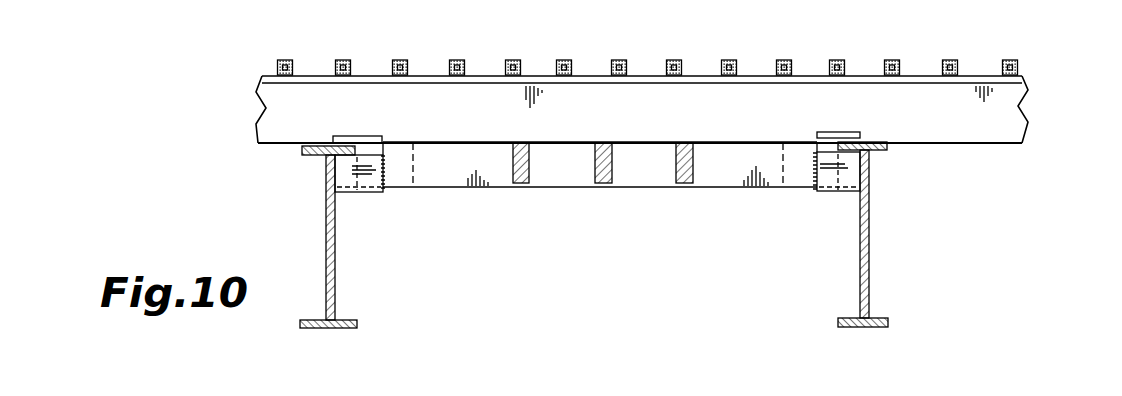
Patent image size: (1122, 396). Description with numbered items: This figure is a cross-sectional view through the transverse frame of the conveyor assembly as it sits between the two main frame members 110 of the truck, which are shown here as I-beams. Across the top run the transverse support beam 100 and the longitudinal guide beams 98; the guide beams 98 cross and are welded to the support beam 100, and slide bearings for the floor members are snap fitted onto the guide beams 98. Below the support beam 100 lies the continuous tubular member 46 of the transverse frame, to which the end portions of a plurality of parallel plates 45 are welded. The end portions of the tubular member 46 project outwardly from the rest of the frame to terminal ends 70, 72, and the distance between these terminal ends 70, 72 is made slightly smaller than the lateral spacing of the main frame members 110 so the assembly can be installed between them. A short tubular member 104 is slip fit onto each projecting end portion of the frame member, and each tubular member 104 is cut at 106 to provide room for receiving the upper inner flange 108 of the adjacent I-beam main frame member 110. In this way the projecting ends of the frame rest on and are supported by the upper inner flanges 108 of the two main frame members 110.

The longitudinal guide beam 98 is at (463, 62).
The transverse support beam 100 is at (1013, 115).
The continuous tubular member 46 is at (730, 178).
The parallel plates 45 is at (681, 184).
The main frame member 110 is at (335, 260).
The upper inner flange 108 is at (345, 143).
The cut 106 is at (378, 148).
The short tubular member 104 is at (370, 192).
The terminal end 72 is at (324, 178).
The terminal end 70 is at (848, 172).